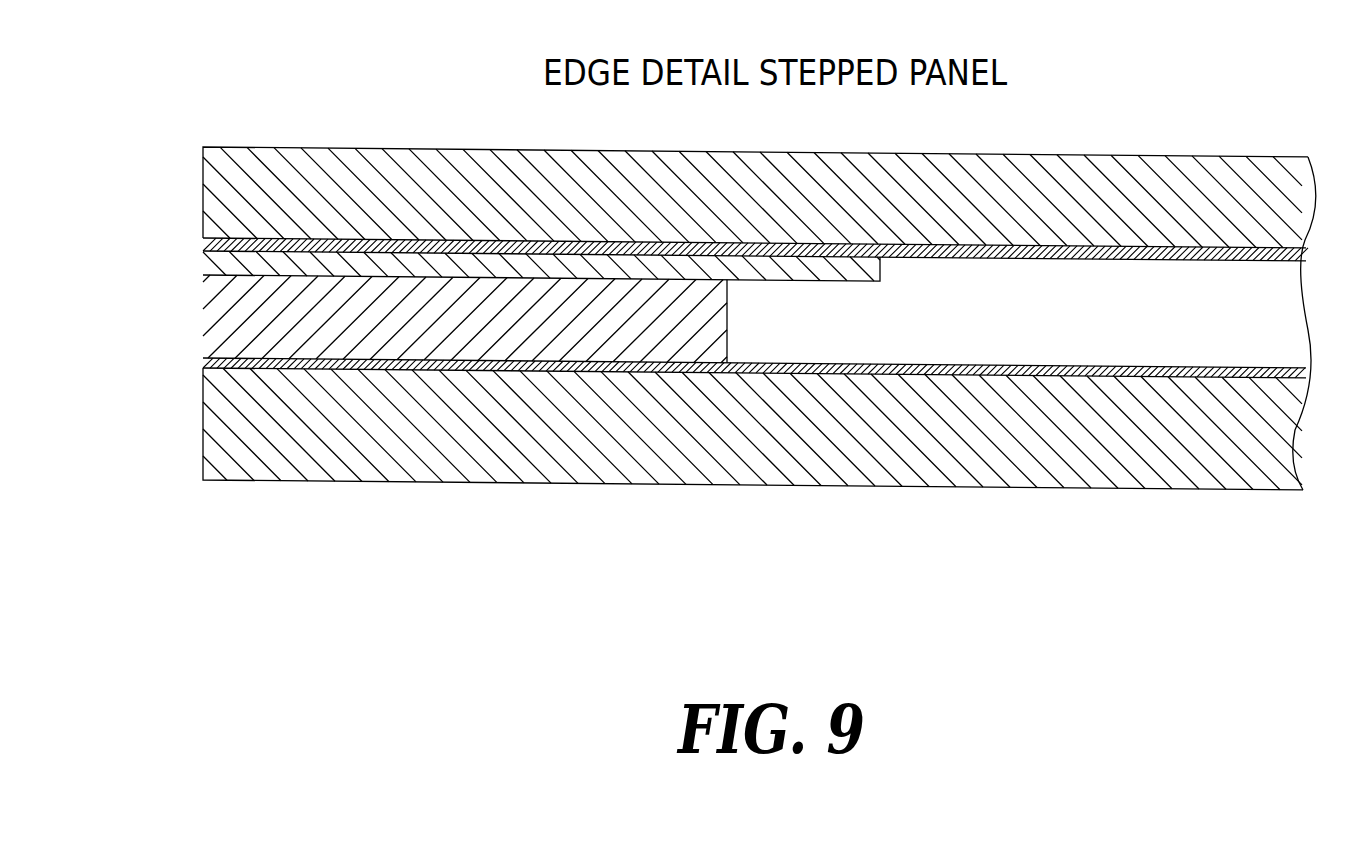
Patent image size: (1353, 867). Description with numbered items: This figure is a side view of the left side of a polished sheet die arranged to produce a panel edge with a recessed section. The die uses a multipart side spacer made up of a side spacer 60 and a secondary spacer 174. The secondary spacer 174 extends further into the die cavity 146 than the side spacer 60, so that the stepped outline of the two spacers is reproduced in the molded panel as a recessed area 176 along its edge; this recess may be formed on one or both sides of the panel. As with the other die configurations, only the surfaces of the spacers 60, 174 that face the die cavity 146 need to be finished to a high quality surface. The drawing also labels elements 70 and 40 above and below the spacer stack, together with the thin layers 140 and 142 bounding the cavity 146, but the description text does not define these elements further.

The upper panel skin 70 is at (1100, 157).
The lower panel skin 40 is at (825, 453).
The side spacer 60 is at (718, 312).
The upper adhesive layer 140 is at (1170, 261).
The lower adhesive layer 142 is at (1183, 368).
The die cavity 146 is at (1096, 327).
The secondary spacer 174 is at (203, 262).
The recessed area 176 is at (1117, 348).